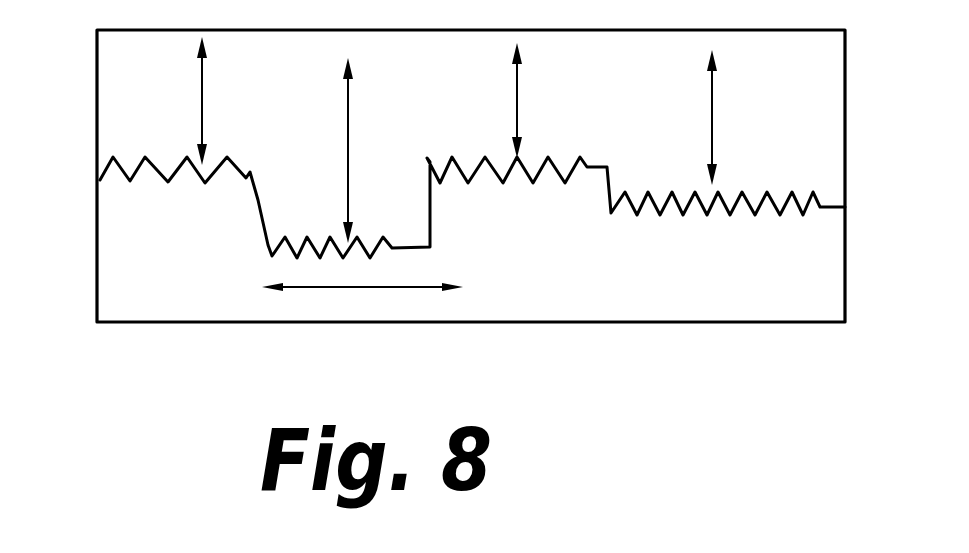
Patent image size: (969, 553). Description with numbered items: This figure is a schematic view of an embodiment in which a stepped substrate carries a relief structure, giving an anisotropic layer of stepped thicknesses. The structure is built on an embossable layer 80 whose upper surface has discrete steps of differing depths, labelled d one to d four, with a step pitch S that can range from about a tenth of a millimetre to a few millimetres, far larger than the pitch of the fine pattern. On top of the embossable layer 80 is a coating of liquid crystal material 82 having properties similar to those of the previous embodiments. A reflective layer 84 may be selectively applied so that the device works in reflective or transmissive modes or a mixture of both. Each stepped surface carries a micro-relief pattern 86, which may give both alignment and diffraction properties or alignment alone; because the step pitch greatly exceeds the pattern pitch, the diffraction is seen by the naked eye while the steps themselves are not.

The embossable layer 80 is at (522, 182).
The liquid crystal material 82 is at (805, 125).
The reflective layer 84 is at (797, 197).
The micro-relief pattern 86 is at (167, 188).